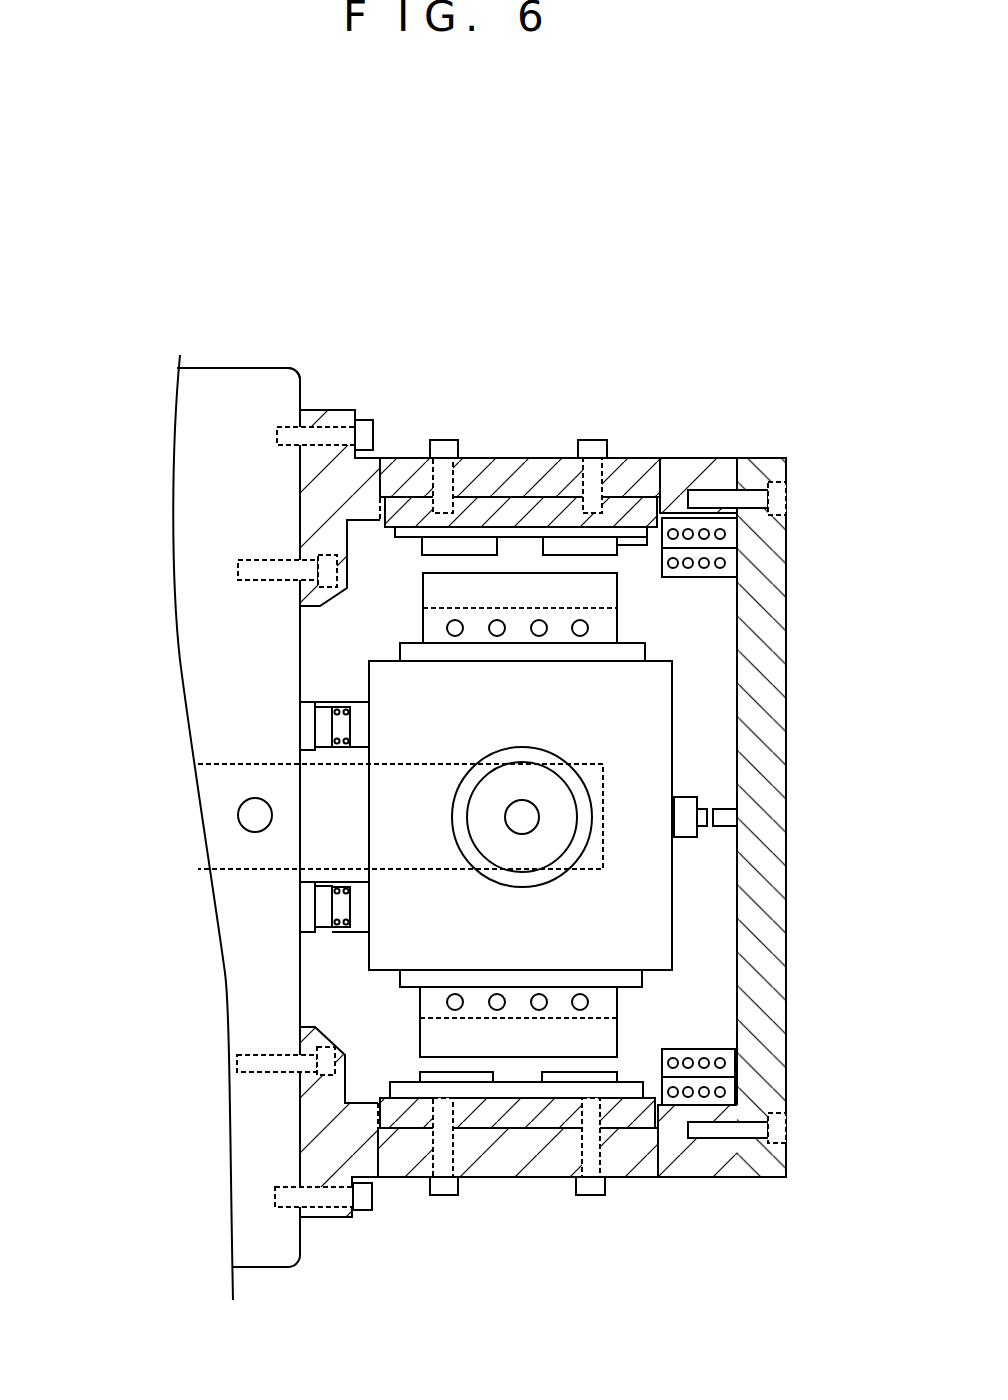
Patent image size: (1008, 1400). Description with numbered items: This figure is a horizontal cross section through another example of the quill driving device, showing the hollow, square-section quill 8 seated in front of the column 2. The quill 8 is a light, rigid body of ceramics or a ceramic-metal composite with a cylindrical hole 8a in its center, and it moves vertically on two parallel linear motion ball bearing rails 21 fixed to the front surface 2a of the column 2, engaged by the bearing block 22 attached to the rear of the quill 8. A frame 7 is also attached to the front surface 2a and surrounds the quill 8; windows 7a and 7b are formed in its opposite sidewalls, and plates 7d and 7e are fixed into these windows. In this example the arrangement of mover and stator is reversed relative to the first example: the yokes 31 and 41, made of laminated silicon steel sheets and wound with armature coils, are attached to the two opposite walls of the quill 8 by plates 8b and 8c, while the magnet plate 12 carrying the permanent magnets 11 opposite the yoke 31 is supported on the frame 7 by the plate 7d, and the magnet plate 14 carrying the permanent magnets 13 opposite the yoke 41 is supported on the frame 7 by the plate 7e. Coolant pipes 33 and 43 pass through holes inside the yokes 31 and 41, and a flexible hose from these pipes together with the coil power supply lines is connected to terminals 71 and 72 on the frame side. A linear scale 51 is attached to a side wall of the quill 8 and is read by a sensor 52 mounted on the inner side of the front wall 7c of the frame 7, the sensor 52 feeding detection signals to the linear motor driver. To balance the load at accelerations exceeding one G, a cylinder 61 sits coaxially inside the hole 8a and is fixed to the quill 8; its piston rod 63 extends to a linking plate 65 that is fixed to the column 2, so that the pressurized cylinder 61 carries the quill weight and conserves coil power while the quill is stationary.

The column 2 is at (217, 395).
The front surface of the column 2a is at (300, 383).
The frame 7 is at (412, 473).
The window 7a is at (658, 1148).
The window 7b is at (662, 477).
The front wall of the frame 7c is at (773, 533).
The plate 7d is at (618, 1118).
The plate 7e is at (535, 507).
The quill 8 is at (662, 722).
The cylindrical hole 8a is at (548, 880).
The plate 8b is at (638, 977).
The plate 8c is at (638, 648).
The permanent magnets 11 is at (445, 1075).
The magnet plate 12 is at (477, 1092).
The permanent magnets 13 is at (468, 547).
The magnet plate 14 is at (627, 538).
The linear motion ball bearing rails 21 is at (325, 730).
The upper bearing block 22 is at (362, 712).
The yoke 31 is at (427, 1040).
The pipes 33 is at (447, 1002).
The yoke 41 is at (425, 590).
The pipes 43 is at (588, 628).
The linear scale 51 is at (687, 830).
The sensor 52 is at (733, 818).
The cylinder 61 is at (573, 797).
The piston rod 63 is at (520, 818).
The linking plate 65 is at (328, 792).
The terminal 71 is at (730, 1062).
The terminal 72 is at (735, 558).